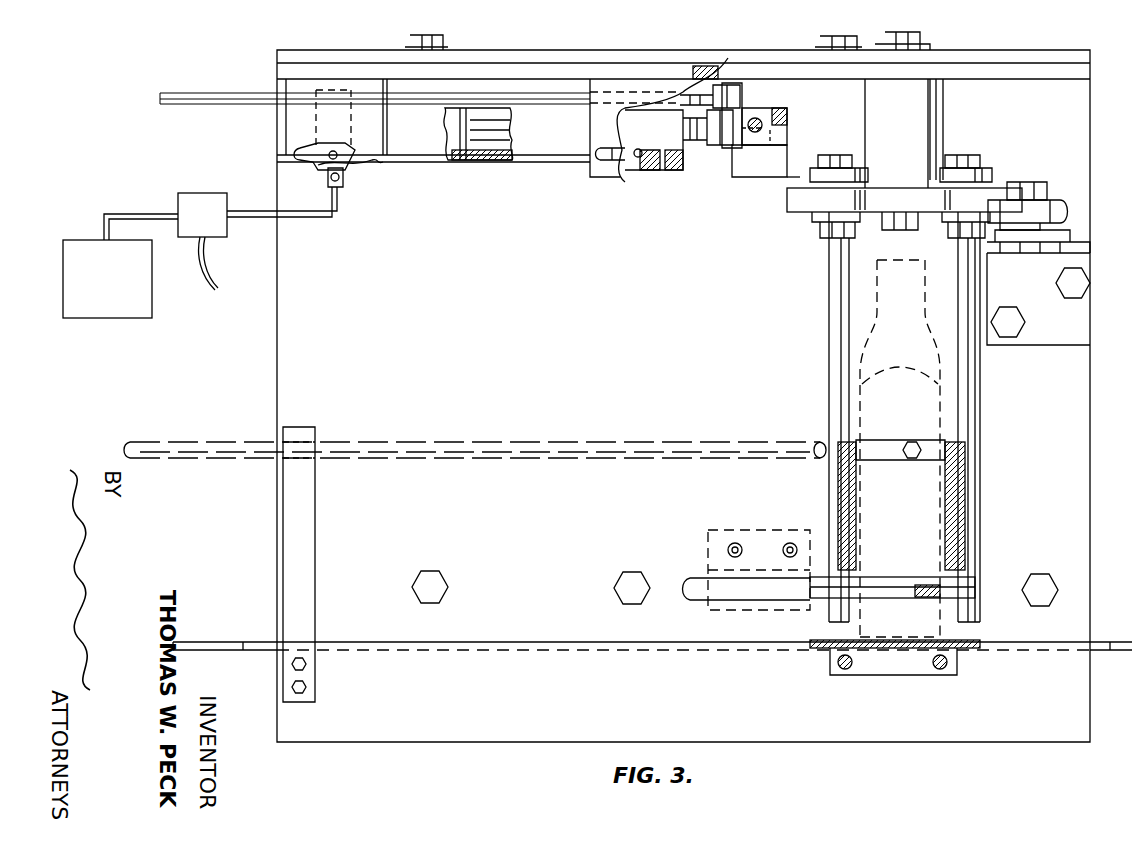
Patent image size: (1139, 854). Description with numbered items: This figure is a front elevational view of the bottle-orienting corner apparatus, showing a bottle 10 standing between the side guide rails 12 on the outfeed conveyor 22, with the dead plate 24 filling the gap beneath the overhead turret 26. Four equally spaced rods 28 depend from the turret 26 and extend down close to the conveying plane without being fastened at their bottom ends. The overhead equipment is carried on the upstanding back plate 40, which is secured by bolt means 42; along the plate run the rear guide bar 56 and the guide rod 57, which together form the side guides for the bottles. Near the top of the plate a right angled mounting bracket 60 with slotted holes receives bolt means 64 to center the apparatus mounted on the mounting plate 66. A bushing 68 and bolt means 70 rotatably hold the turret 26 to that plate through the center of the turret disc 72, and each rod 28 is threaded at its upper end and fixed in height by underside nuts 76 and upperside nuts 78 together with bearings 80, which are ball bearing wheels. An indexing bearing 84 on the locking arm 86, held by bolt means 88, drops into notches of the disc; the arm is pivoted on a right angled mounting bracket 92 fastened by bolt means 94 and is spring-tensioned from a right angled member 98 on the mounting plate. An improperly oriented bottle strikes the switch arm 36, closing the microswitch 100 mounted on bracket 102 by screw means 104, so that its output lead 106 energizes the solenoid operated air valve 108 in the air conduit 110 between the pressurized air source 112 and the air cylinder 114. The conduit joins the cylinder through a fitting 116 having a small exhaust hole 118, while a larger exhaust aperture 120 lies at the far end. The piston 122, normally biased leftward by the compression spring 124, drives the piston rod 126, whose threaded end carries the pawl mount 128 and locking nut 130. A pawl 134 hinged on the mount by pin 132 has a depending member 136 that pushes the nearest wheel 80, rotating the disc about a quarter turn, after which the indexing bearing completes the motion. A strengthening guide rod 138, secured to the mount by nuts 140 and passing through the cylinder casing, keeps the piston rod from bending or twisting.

The bottle 10 is at (872, 342).
The side guide rails 12 is at (838, 474).
The outfeed conveyor 22 is at (228, 642).
The dead plate 24 is at (980, 650).
The turret 26 is at (806, 240).
The rods 28 is at (829, 355).
The switch arm 36 is at (820, 598).
The back plate 40 is at (1100, 434).
The bolt means 42 is at (448, 587).
The rear guide bar 56 is at (886, 440).
The guide rod 57 is at (766, 442).
The right angled mounting bracket 60 is at (277, 56).
The bolt means 64 is at (440, 38).
The mounting plate 66 is at (277, 72).
The bushing 68 is at (943, 122).
The bolt means 70 is at (918, 40).
The turret disc 72 is at (794, 213).
The underside nuts 76 is at (830, 240).
The upperside nuts 78 is at (840, 155).
The bearings 80 is at (810, 180).
The bearing 84 is at (1070, 211).
The locking arm 86 is at (1070, 236).
The bolt means 88 is at (1035, 184).
The right angled mounting bracket 92 is at (1075, 345).
The bolt means 94 is at (1064, 298).
The right angled member 98 is at (726, 60).
The microswitch 100 is at (692, 590).
The bracket 102 is at (708, 548).
The screw means 104 is at (780, 544).
The output lead 106 is at (214, 272).
The solenoid operated air valve 108 is at (212, 193).
The air conduit 110 is at (150, 211).
The pressurized air source 112 is at (100, 318).
The air cylinder 114 is at (551, 172).
The fitting 116 is at (343, 178).
The exhaust hole 118 is at (320, 170).
The exhaust aperture 120 is at (648, 160).
The piston 122 is at (458, 135).
The compression spring 124 is at (508, 160).
The piston rod 126 is at (463, 162).
The pawl mount 128 is at (737, 177).
The locking nut 130 is at (712, 148).
The pin 132 is at (757, 132).
The pawl 134 is at (782, 122).
The depending member 136 is at (788, 178).
The strengthening guide rod 138 is at (220, 106).
The nuts 140 is at (755, 95).